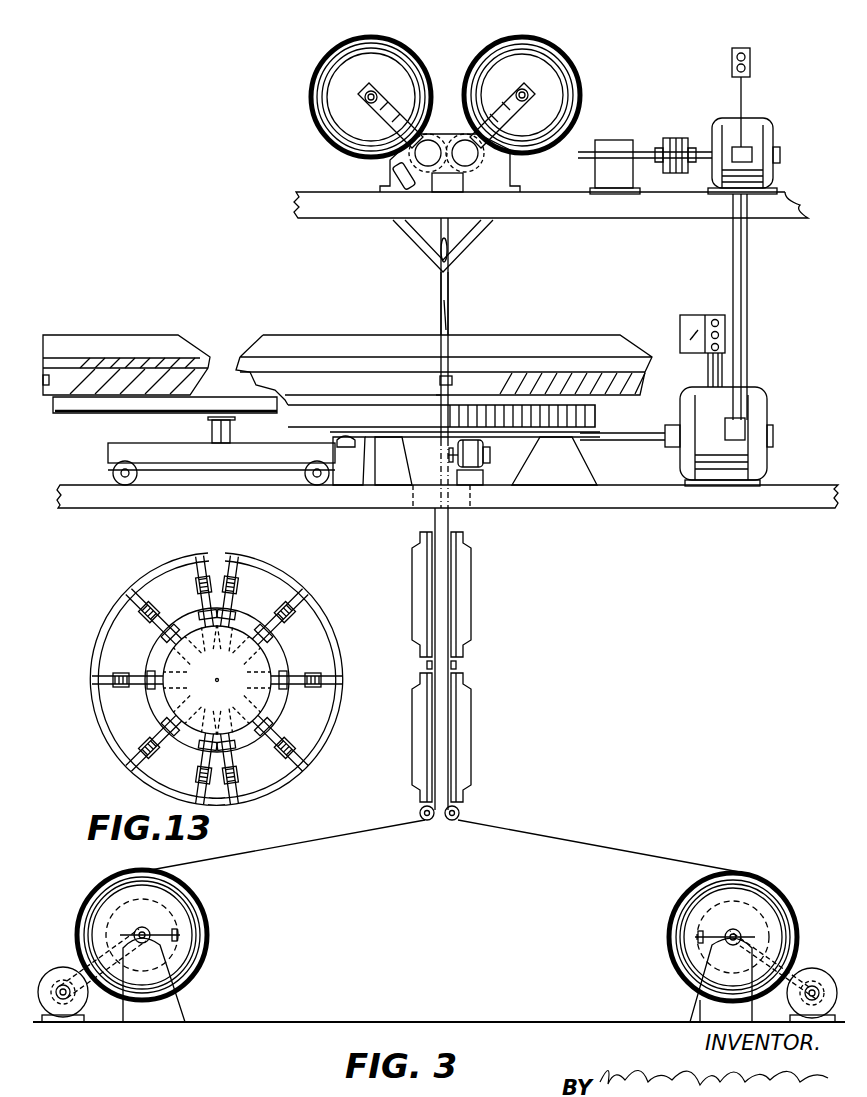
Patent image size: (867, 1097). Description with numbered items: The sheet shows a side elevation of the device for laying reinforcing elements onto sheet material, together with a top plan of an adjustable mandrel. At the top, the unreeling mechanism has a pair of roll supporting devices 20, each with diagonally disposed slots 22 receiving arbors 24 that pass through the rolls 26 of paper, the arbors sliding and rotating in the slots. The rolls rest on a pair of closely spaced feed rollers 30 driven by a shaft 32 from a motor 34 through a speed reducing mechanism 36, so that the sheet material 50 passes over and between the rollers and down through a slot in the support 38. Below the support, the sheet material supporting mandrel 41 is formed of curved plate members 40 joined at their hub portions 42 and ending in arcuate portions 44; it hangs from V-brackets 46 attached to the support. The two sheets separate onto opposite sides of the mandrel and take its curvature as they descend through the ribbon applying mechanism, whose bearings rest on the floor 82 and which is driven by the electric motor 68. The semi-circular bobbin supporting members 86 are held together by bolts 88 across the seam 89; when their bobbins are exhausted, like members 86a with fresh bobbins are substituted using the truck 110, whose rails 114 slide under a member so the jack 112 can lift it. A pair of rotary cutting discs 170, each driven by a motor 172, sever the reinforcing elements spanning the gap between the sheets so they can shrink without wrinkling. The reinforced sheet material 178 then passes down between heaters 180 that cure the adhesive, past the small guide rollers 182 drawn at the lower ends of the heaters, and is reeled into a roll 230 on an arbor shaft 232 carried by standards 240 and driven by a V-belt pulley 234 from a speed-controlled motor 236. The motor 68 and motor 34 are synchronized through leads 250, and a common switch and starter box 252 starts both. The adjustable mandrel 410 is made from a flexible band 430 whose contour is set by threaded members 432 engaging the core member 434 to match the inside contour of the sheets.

In FIG. 3, the roll supporting devices 20 is at (390, 160).
In FIG. 3, the diagonally disposed slots 22 is at (398, 100).
In FIG. 3, the arbors 24 is at (355, 118).
In FIG. 3, the rolls of sheet material 26 is at (334, 60).
In FIG. 3, the feed rollers 30 is at (437, 140).
In FIG. 3, the shaft 32 is at (568, 160).
In FIG. 3, the motor 34 is at (745, 120).
In FIG. 3, the speed reducing mechanism 36 is at (620, 142).
In FIG. 3, the support 38 is at (330, 220).
In FIG. 3, the curved plate members 40 is at (440, 306).
In FIG. 3, the sheet material supporting mandrel 41 is at (452, 326).
In FIG. 3, the hub portions 42 is at (450, 300).
In FIG. 3, the arcuate portions 44 is at (437, 236).
In FIG. 3, the V-brackets 46 is at (428, 246).
In FIG. 3, the sheet material 50 is at (440, 213).
In FIG. 3, the electric motor 68 is at (732, 486).
In FIG. 3, the support or floor 82 is at (256, 506).
In FIG. 3, the semi-circular bobbin supporting members 86 is at (250, 362).
In FIG. 3, the replacement bobbin supporting members 86a is at (188, 352).
In FIG. 3, the bolts 88 is at (453, 381).
In FIG. 3, the seam 89 is at (435, 398).
In FIG. 3, the truck 110 is at (190, 453).
In FIG. 3, the jack 112 is at (210, 430).
In FIG. 3, the rails 114 is at (72, 414).
In FIG. 3, the rotary cutting discs 170 is at (448, 455).
In FIG. 3, the motor 172 is at (484, 448).
In FIG. 3, the reinforced sheet material 178 is at (428, 665).
In FIG. 3, the heaters 180 is at (418, 596).
In FIG. 3, the guide rollers 182 is at (420, 816).
In FIG. 3, the roll 230 is at (195, 937).
In FIG. 3, the arbor shaft 232 is at (185, 972).
In FIG. 3, the V-belt pulley 234 is at (100, 990).
In FIG. 3, the motor 236 is at (52, 967).
In FIG. 3, the standards 240 is at (698, 1002).
In FIG. 3, the leads 250 is at (748, 260).
In FIG. 3, the common switch and starter box 252 is at (706, 315).
In FIG. 13, the mandrel 410 is at (108, 614).
In FIG. 13, the flexible band 430 is at (210, 560).
In FIG. 13, the threaded members 432 is at (140, 602).
In FIG. 13, the core member 434 is at (270, 655).